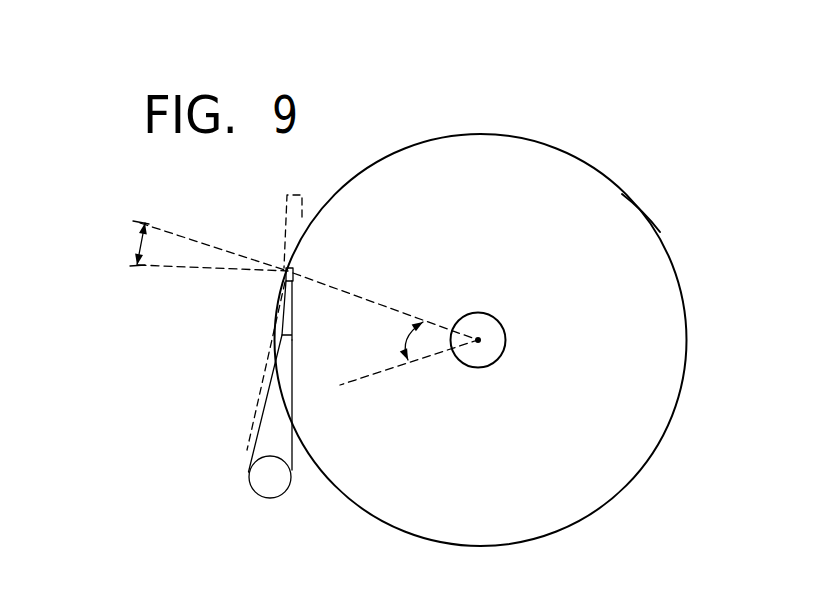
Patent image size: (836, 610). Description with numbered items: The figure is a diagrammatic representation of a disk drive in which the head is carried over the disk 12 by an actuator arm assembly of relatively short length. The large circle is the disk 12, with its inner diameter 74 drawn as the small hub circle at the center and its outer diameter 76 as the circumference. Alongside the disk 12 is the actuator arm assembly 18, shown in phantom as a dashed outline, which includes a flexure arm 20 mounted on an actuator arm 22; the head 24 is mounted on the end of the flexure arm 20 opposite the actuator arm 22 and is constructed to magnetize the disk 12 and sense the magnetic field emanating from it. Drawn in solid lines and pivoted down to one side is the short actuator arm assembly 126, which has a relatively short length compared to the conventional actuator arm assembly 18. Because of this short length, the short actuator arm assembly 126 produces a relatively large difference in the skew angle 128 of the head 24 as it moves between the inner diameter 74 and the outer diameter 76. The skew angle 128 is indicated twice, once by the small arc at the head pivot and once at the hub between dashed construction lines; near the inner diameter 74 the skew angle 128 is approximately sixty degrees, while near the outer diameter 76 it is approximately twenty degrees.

The disk 12 is at (522, 244).
The actuator arm assembly 18 is at (283, 206).
The flexure arm 20 is at (293, 302).
The actuator arm 22 is at (292, 410).
The head 24 is at (293, 270).
The inner diameter 74 is at (505, 335).
The outer diameter 76 is at (641, 212).
The short actuator arm assembly 126 is at (243, 448).
The skew angle 128 is at (138, 240).